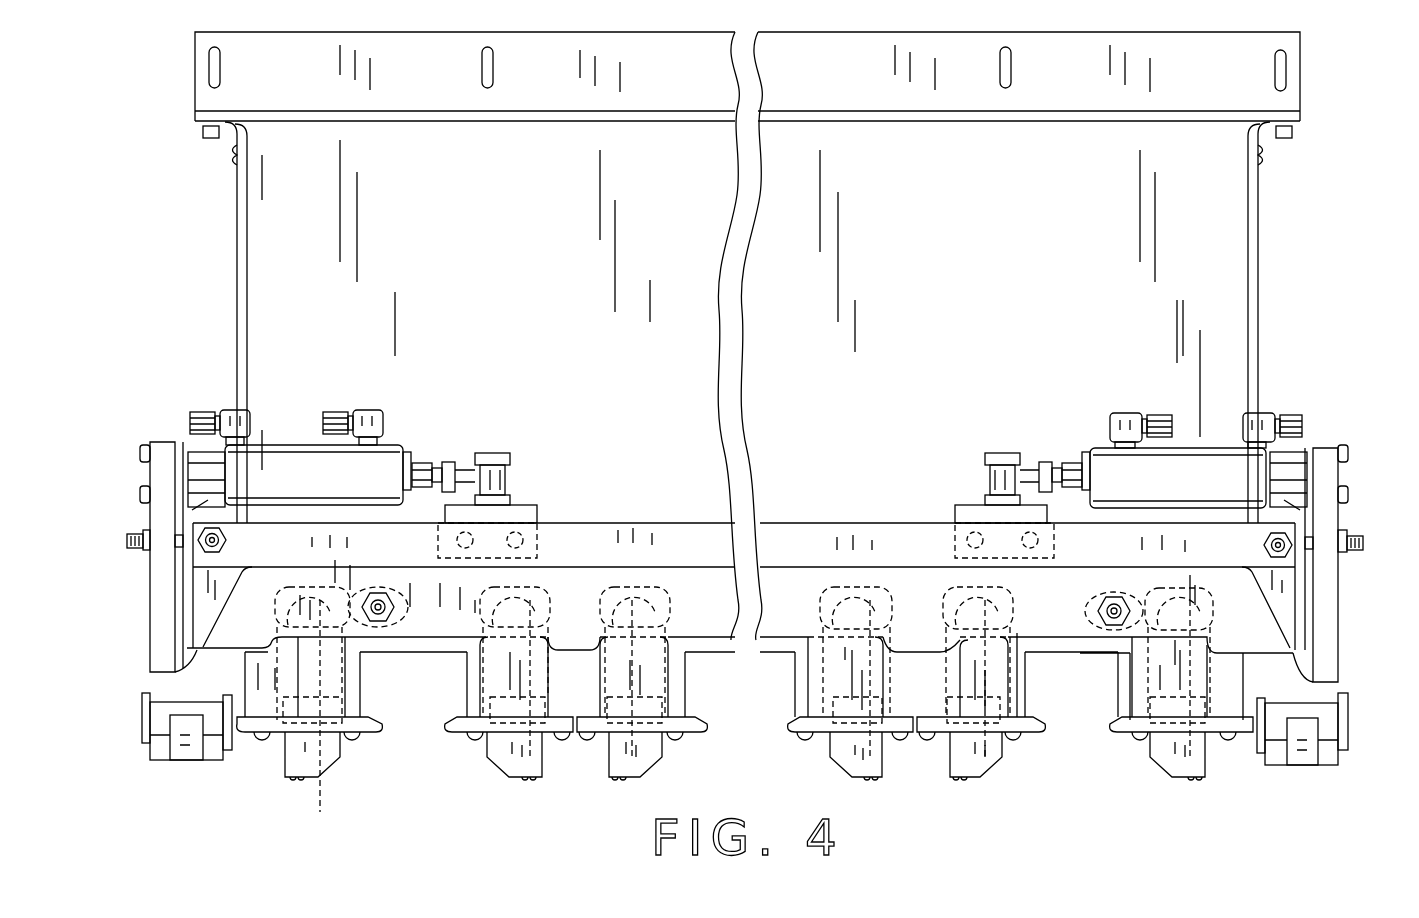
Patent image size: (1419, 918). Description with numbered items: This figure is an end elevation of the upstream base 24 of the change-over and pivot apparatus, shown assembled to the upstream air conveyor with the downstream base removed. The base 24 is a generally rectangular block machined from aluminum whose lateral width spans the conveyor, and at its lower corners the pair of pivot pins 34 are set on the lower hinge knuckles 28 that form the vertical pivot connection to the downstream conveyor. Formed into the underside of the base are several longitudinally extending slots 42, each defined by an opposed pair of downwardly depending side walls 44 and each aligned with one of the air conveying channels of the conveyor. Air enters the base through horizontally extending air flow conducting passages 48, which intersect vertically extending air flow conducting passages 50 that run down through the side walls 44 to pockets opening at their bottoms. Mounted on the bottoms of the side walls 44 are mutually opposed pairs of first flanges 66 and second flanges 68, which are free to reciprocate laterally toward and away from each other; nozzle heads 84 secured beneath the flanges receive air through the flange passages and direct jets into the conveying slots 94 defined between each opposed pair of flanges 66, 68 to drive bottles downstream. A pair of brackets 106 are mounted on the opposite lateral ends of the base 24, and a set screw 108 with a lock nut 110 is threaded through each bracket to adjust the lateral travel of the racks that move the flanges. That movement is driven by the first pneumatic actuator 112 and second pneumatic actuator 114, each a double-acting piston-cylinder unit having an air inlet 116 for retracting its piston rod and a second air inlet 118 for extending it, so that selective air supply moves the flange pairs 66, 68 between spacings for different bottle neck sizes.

The upstream base 24 is at (1280, 598).
The lower hinge knuckles 28 is at (160, 755).
The pivot pins 34 is at (158, 712).
The longitudinally extending slots 42 is at (418, 708).
The side walls 44 is at (362, 698).
The horizontally extending air flow conducting passages 48 is at (515, 587).
The vertically extending air flow conducting passages 50 is at (278, 680).
The first flanges 66 is at (366, 726).
The second flanges 68 is at (468, 726).
The nozzle heads 84 is at (297, 757).
The conveying slots 94 is at (393, 752).
The brackets 106 is at (162, 591).
The set screw 108 is at (122, 542).
The lock nut 110 is at (148, 500).
The first pneumatic actuator 112 is at (285, 462).
The second pneumatic actuator 114 is at (1213, 448).
The air inlet 116 is at (373, 410).
The second air inlet 118 is at (220, 410).